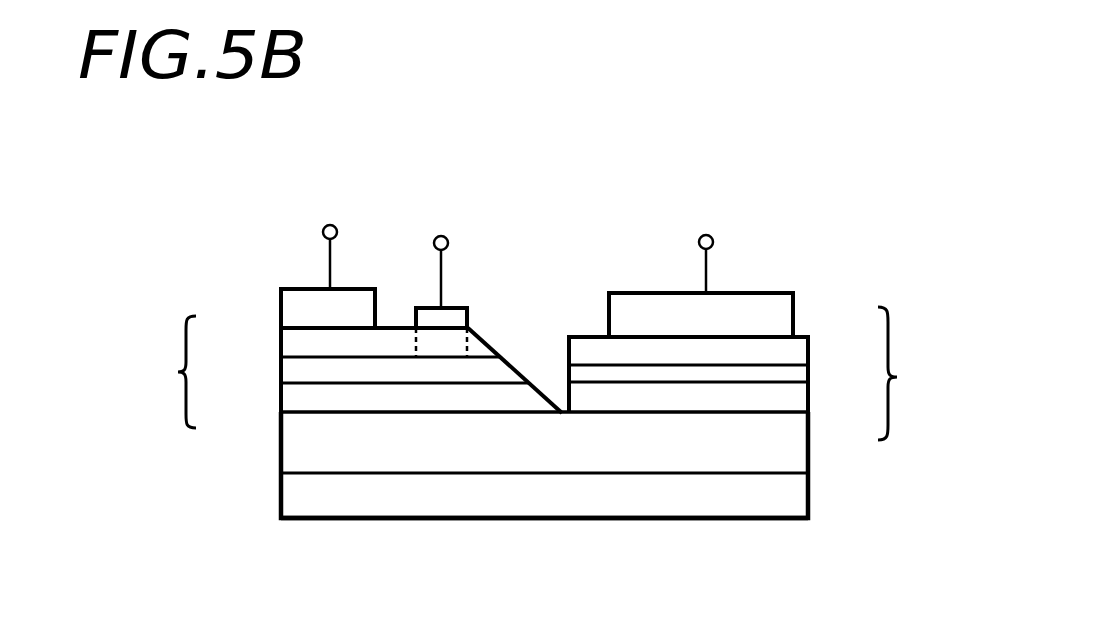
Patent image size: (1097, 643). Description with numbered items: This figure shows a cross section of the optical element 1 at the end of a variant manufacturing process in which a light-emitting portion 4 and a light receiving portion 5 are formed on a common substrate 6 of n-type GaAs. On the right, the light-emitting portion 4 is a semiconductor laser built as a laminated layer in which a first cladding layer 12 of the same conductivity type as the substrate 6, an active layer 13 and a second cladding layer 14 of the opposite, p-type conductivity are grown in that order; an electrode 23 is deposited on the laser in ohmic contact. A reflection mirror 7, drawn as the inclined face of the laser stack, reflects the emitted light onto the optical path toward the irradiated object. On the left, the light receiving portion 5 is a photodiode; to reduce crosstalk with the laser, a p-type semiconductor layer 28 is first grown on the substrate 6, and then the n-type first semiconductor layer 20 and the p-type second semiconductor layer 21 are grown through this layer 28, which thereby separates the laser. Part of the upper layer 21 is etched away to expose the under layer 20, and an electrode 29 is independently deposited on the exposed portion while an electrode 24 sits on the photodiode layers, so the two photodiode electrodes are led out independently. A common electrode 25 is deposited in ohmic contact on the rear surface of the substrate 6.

The optical element 1 is at (223, 262).
The light-emitting portion 4 is at (633, 192).
The light receiving portion 5 is at (391, 192).
The substrate 6 is at (757, 452).
The reflection mirror 7 is at (523, 370).
The first cladding layer 12 is at (797, 398).
The active layer 13 is at (798, 372).
The second cladding layer 14 is at (795, 350).
The first semiconductor layer 20 is at (300, 373).
The second semiconductor layer 21 is at (300, 342).
The electrode 23 is at (765, 308).
The electrode 24 is at (312, 302).
The common electrode 25 is at (618, 505).
The semiconductor layer 28 is at (378, 398).
The electrode 29 is at (458, 313).